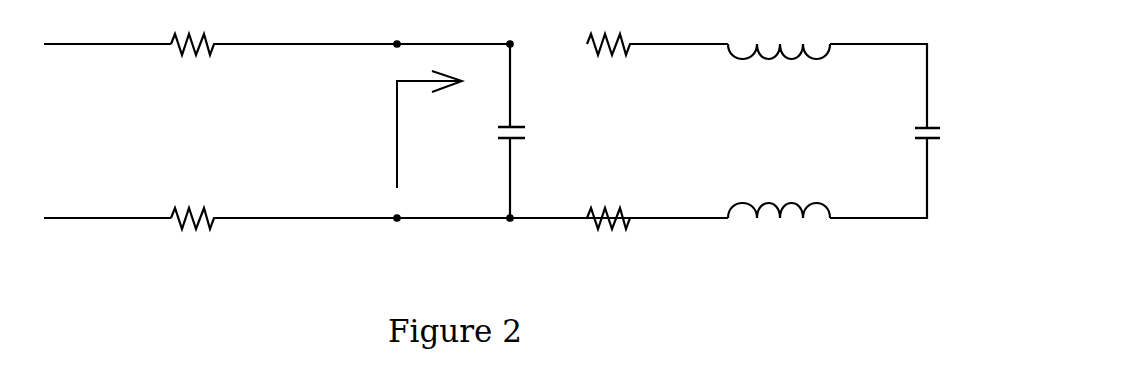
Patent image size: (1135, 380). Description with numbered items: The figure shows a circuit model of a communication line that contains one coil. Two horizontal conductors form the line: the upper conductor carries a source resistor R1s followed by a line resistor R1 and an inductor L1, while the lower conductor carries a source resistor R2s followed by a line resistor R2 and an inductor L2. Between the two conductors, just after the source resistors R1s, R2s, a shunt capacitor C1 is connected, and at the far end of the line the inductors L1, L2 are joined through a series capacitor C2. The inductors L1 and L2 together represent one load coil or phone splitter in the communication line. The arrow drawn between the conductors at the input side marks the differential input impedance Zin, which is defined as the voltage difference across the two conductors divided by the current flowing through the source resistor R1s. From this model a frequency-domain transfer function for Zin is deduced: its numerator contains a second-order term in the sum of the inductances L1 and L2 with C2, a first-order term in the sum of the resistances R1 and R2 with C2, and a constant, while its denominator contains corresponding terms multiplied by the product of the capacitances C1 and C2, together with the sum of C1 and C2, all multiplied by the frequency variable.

The source resistor R1s is at (194, 29).
The source resistor R2s is at (194, 202).
The line resistor R1 is at (611, 30).
The line resistor R2 is at (611, 202).
The inductor L1 is at (779, 39).
The inductor L2 is at (779, 194).
The shunt capacitor C1 is at (535, 133).
The series capacitor C2 is at (909, 136).
The differential input impedance Zin is at (429, 129).